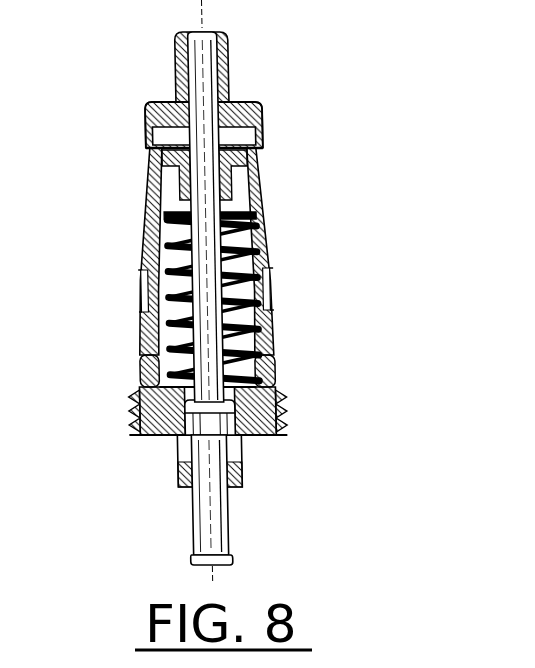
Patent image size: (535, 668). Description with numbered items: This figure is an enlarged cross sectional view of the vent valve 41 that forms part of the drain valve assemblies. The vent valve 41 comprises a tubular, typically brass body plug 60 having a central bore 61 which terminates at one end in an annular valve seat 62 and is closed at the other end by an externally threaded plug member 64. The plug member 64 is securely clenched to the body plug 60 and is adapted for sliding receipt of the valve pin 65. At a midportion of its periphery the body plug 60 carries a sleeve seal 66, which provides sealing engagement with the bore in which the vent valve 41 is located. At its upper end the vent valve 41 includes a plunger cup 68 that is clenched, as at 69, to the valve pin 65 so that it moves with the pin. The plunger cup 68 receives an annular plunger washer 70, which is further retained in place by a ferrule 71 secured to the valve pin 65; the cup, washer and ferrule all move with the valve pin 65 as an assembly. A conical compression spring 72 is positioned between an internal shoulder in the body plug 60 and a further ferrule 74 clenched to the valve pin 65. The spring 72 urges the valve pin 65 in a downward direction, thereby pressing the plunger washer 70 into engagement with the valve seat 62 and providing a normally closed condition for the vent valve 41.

The vent valve 41 is at (307, 160).
The body plug 60 is at (250, 226).
The central bore 61 is at (265, 252).
The annular valve seat 62 is at (152, 160).
The externally threaded plug member 64 is at (277, 418).
The valve pin 65 is at (203, 535).
The sleeve seal 66 is at (142, 282).
The plunger cup 68 is at (157, 102).
The clench 69 is at (220, 73).
The annular plunger washer 70 is at (233, 133).
The ferrule 71 is at (232, 179).
The conical compression spring 72 is at (247, 315).
The further ferrule 74 is at (178, 443).